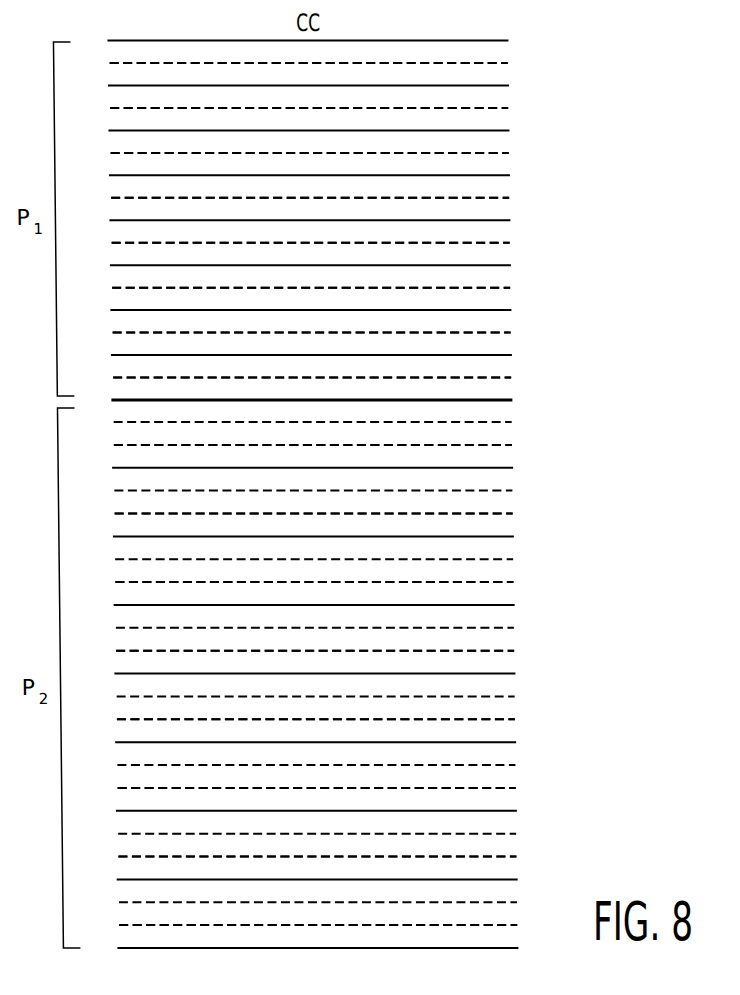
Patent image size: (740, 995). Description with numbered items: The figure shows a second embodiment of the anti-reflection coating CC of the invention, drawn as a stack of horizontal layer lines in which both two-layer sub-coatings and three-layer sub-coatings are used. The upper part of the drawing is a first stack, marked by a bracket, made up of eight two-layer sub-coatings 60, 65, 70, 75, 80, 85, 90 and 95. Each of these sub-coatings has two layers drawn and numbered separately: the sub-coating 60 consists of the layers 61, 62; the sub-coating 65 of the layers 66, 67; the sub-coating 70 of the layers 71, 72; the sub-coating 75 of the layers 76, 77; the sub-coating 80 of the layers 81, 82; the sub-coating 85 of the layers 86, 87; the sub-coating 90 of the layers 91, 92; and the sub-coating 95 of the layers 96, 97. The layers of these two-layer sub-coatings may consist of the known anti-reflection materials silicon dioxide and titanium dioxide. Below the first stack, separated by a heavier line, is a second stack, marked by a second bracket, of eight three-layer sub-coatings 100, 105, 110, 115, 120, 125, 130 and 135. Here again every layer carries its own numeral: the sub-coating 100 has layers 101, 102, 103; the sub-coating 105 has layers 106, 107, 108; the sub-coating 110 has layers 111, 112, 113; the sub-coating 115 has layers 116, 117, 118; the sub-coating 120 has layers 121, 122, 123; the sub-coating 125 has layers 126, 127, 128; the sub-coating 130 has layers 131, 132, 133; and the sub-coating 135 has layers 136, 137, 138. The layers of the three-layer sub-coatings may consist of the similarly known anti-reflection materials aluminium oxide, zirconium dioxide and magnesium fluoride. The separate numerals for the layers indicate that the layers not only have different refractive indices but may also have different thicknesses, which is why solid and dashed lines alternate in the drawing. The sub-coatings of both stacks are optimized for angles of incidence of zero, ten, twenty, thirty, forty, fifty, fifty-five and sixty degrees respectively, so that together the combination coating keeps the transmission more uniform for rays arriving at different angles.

The two-layer sub-coating 60 is at (297, 63).
The layer 61 is at (494, 54).
The layer 62 is at (494, 77).
The two-layer sub-coating 65 is at (297, 108).
The layer 66 is at (494, 99).
The layer 67 is at (494, 122).
The two-layer sub-coating 70 is at (298, 153).
The layer 71 is at (494, 144).
The layer 72 is at (494, 167).
The two-layer sub-coating 75 is at (298, 198).
The layer 76 is at (494, 189).
The layer 77 is at (494, 212).
The two-layer sub-coating 80 is at (299, 243).
The layer 81 is at (494, 234).
The layer 82 is at (494, 257).
The two-layer sub-coating 85 is at (299, 288).
The layer 86 is at (494, 279).
The layer 87 is at (494, 302).
The two-layer sub-coating 90 is at (300, 333).
The layer 91 is at (494, 324).
The layer 92 is at (494, 347).
The two-layer sub-coating 95 is at (300, 378).
The layer 96 is at (494, 369).
The layer 97 is at (494, 392).
The three-layer sub-coating 100 is at (296, 437).
The layer 101 is at (494, 414).
The layer 102 is at (494, 437).
The layer 103 is at (494, 460).
The three-layer sub-coating 105 is at (296, 505).
The layer 106 is at (494, 483).
The layer 107 is at (494, 506).
The layer 108 is at (494, 528).
The three-layer sub-coating 110 is at (297, 574).
The layer 111 is at (494, 551).
The layer 112 is at (494, 574).
The layer 113 is at (494, 597).
The three-layer sub-coating 115 is at (298, 642).
The layer 116 is at (494, 620).
The layer 117 is at (494, 643).
The layer 118 is at (494, 666).
The three-layer sub-coating 120 is at (299, 711).
The layer 121 is at (494, 688).
The layer 122 is at (494, 711).
The layer 123 is at (494, 734).
The three-layer sub-coating 125 is at (299, 780).
The layer 126 is at (494, 757).
The layer 127 is at (494, 780).
The layer 128 is at (494, 803).
The three-layer sub-coating 130 is at (300, 848).
The layer 131 is at (494, 826).
The layer 132 is at (494, 848).
The layer 133 is at (494, 871).
The three-layer sub-coating 135 is at (301, 917).
The layer 136 is at (494, 894).
The layer 137 is at (494, 917).
The layer 138 is at (494, 940).